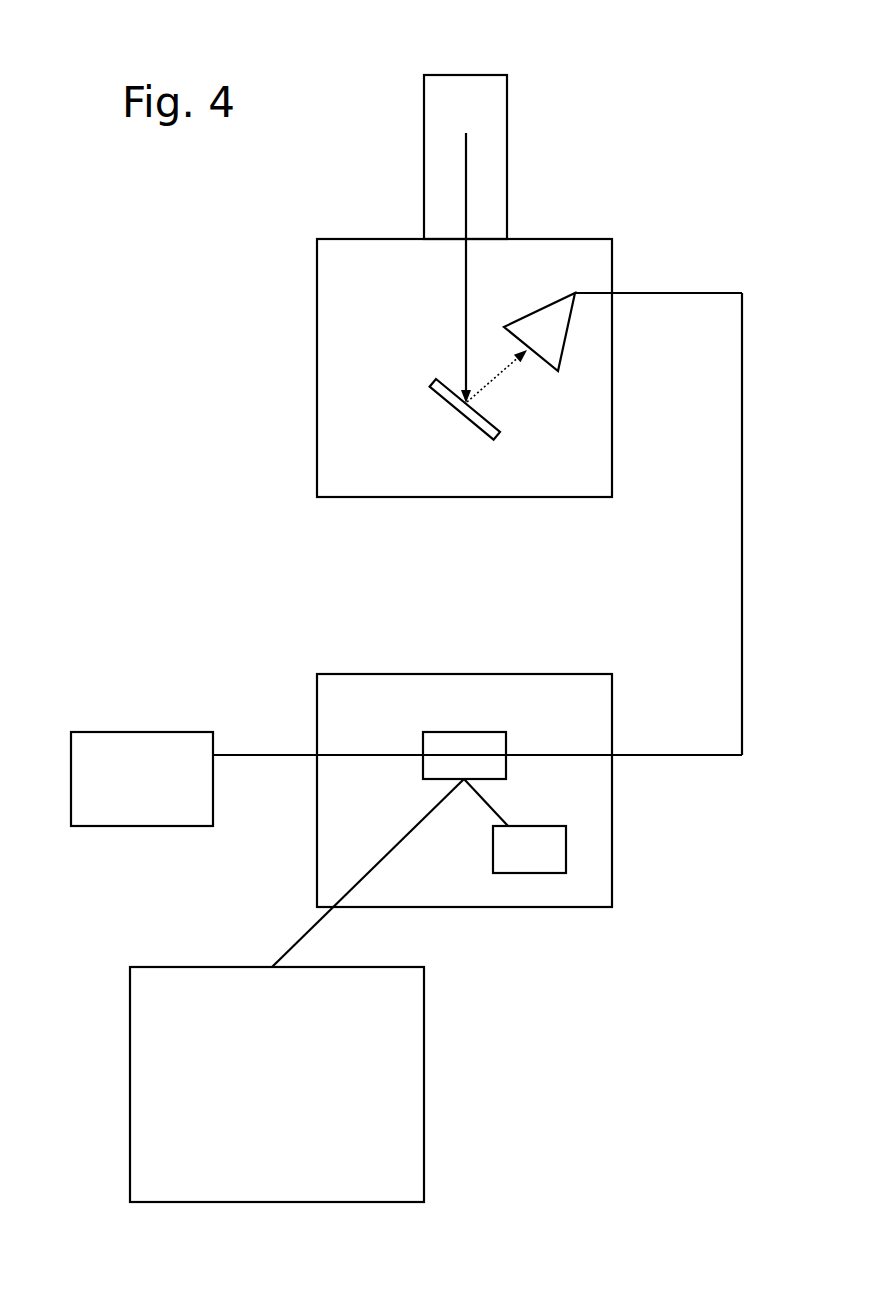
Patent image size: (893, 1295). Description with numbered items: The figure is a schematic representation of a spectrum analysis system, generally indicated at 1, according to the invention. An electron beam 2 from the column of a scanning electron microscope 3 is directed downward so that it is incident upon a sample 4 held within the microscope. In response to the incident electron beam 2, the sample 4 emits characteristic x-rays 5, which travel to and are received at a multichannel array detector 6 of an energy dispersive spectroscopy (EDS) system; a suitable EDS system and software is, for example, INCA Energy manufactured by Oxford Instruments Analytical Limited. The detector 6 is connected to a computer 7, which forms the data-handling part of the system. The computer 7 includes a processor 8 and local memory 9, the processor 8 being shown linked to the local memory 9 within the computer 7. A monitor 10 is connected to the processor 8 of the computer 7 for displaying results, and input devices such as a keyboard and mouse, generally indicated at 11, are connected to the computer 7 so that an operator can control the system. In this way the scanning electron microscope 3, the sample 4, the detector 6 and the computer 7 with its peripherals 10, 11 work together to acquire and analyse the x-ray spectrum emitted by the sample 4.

The spectrum analysis system 1 is at (693, 160).
The electron beam 2 is at (466, 203).
The scanning electron microscope 3 is at (317, 272).
The sample 4 is at (428, 387).
The characteristic x-rays 5 is at (507, 379).
The multichannel array detector 6 is at (553, 310).
The computer 7 is at (317, 674).
The processor 8 is at (493, 732).
The local memory 9 is at (527, 873).
The monitor 10 is at (424, 1025).
The input devices 11 is at (107, 732).